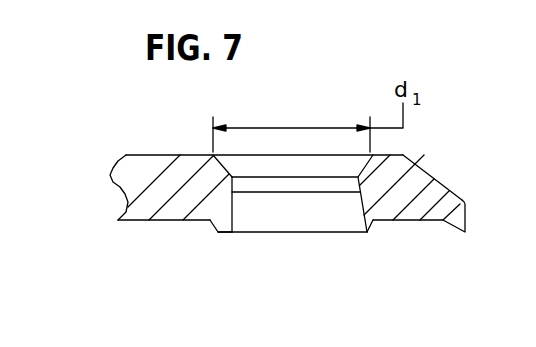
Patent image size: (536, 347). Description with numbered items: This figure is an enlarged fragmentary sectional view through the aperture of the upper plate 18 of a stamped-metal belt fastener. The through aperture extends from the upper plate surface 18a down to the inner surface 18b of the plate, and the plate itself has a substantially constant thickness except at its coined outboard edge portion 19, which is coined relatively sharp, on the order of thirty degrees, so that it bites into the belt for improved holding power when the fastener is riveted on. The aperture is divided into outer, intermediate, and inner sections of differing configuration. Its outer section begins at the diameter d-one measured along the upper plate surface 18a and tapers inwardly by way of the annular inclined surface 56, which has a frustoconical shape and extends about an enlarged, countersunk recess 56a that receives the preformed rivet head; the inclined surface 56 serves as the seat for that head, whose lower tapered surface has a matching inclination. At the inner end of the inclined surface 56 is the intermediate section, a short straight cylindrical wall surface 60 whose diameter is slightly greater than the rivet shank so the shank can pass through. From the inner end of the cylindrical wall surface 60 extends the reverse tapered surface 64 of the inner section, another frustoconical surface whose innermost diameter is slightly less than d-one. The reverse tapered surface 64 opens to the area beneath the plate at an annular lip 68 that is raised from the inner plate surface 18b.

The upper plate 18 is at (127, 199).
The upper plate surface 18a is at (157, 154).
The inner surface of upper plate 18b is at (168, 225).
The coined outboard edge portion 19 is at (458, 197).
The annular inclined surface 56 is at (352, 157).
The countersunk recess 56a is at (307, 170).
The cylindrical wall surface 60 is at (233, 187).
The reverse tapered surface 64 is at (225, 210).
The annular lip 68 is at (384, 221).